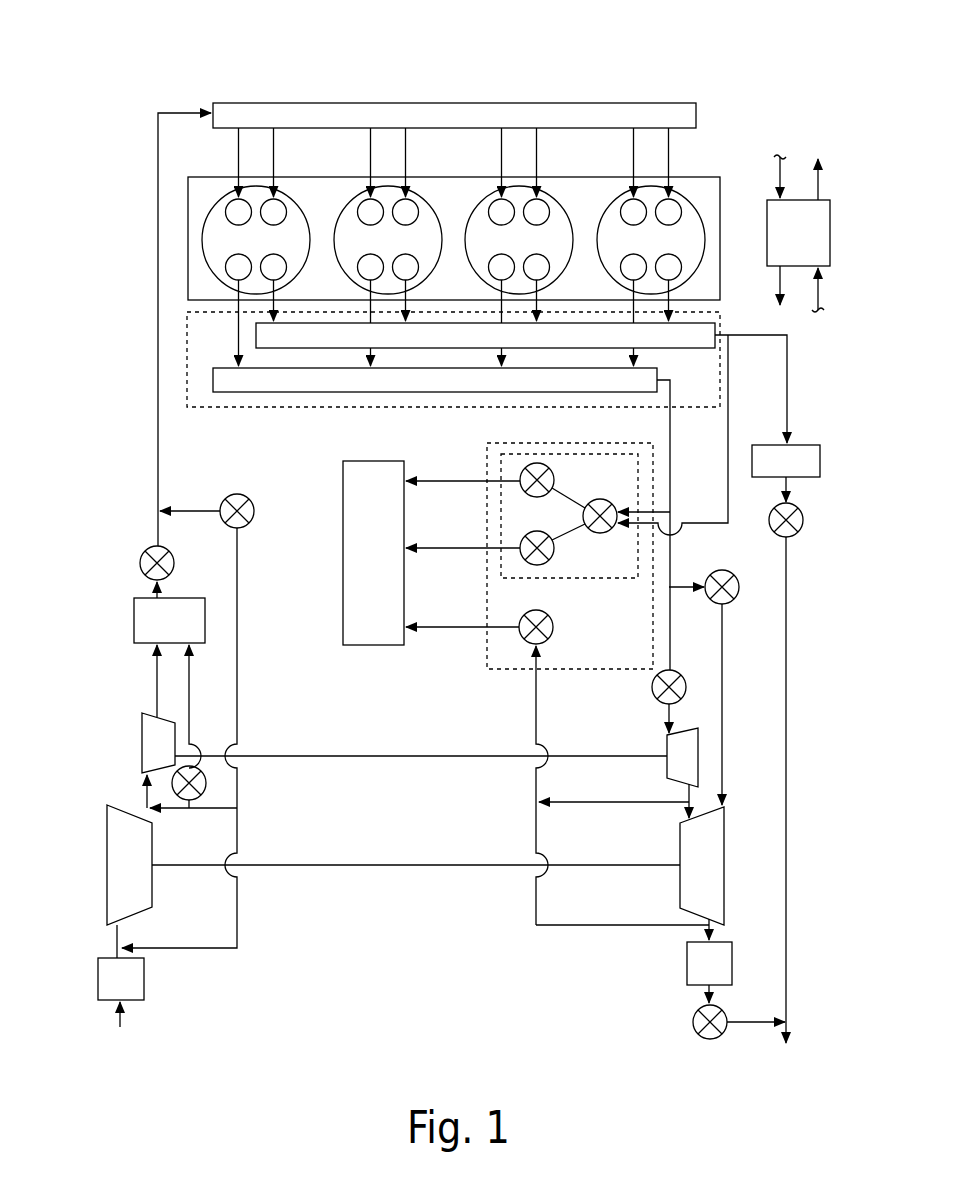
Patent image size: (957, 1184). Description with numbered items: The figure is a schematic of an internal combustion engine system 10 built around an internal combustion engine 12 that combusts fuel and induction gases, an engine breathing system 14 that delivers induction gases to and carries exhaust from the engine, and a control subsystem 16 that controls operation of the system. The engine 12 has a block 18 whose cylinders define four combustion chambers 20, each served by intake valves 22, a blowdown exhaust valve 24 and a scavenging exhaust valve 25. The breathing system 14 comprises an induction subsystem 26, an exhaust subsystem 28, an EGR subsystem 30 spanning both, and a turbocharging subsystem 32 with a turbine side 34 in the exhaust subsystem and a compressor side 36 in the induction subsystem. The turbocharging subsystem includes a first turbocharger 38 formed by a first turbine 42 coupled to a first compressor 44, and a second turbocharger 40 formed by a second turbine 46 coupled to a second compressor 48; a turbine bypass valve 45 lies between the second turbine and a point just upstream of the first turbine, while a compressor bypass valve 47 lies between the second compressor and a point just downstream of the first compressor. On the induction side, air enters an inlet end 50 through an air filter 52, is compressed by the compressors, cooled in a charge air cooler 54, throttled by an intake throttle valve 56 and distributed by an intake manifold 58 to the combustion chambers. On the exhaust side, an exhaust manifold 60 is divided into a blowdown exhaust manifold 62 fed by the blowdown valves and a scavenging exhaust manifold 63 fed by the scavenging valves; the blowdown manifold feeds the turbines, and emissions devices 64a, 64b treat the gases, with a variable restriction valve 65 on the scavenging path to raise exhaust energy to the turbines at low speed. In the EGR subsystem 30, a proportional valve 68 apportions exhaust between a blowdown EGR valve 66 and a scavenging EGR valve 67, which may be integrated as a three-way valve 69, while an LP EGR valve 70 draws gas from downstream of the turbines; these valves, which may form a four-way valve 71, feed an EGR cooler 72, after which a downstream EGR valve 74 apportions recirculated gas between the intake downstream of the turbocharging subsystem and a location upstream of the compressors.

The engine system 10 is at (160, 46).
The internal combustion engine 12 is at (742, 140).
The engine breathing system 14 is at (346, 936).
The control subsystem 16 is at (786, 246).
The block 18 is at (445, 292).
The combustion chamber 20 is at (298, 219).
The intake valve 22 is at (273, 208).
The blowdown exhaust valve 24 is at (236, 266).
The scavenging exhaust valve 25 is at (263, 266).
The induction subsystem 26 is at (208, 964).
The exhaust subsystem 28 is at (561, 939).
The exhaust gas recirculation subsystem 30 is at (358, 444).
The turbocharging subsystem 32 is at (418, 810).
The turbine side 34 is at (734, 762).
The compressor side 36 is at (122, 763).
The first turbocharger 38 is at (388, 758).
The second turbocharger 40 is at (395, 867).
The first turbine 42 is at (671, 770).
The first compressor 44 is at (146, 759).
The turbine bypass valve 45 is at (738, 590).
The second turbine 46 is at (691, 878).
The compressor bypass valve 47 is at (207, 783).
The second compressor 48 is at (116, 877).
The inlet end 50 is at (123, 1037).
The air filter 52 is at (109, 992).
The charge air cooler 54 is at (158, 630).
The intake throttle valve 56 is at (141, 556).
The intake manifold 58 is at (278, 110).
The exhaust manifold 60 is at (735, 353).
The blowdown exhaust manifold 62 is at (213, 380).
The scavenging exhaust manifold 63 is at (722, 326).
The first emissions device 64a is at (768, 473).
The second emissions device 64b is at (691, 976).
The variable restriction valve 65 is at (775, 530).
The blowdown EGR valve 66 is at (555, 479).
The scavenging EGR valve 67 is at (555, 549).
The proportional valve 68 is at (584, 519).
The three-way valve 69 is at (640, 467).
The LP EGR valve 70 is at (555, 626).
The four-way valve 71 is at (643, 433).
The EGR cooler 72 is at (361, 566).
The downstream EGR valve 74 is at (243, 494).